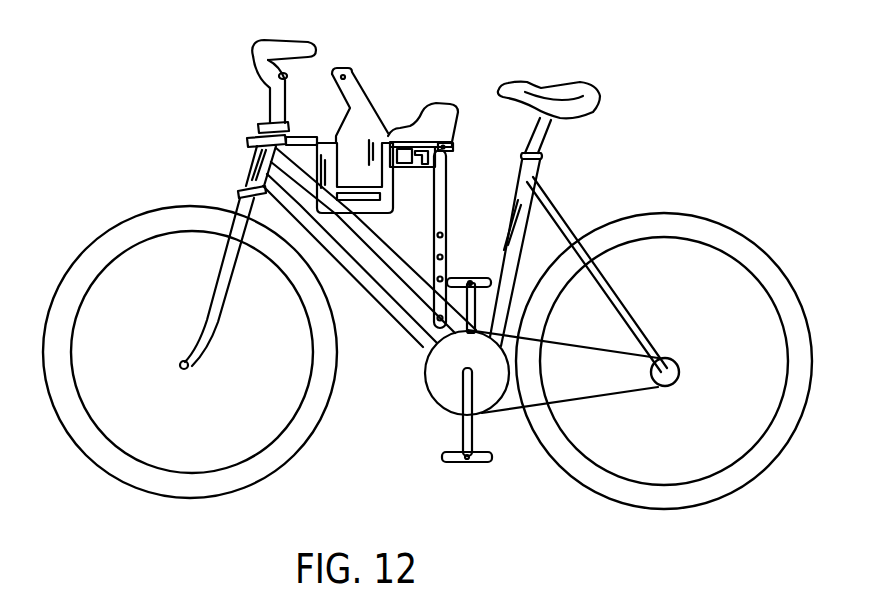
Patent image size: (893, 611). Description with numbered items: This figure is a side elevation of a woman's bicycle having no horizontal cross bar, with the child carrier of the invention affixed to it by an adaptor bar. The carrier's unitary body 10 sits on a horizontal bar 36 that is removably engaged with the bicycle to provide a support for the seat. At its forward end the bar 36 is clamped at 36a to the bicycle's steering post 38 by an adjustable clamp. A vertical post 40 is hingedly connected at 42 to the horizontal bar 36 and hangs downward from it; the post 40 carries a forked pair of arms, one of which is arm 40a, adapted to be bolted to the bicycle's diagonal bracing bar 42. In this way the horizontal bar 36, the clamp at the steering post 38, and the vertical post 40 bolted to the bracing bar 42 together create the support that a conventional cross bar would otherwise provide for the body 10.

The unitary body 10 is at (391, 97).
The bar 36 is at (305, 134).
The clamp point 36a is at (243, 131).
The steering post 38 is at (245, 167).
The vertical post 40 is at (446, 197).
The arm 40a is at (433, 303).
The diagonal bracing bar 42 is at (453, 145).